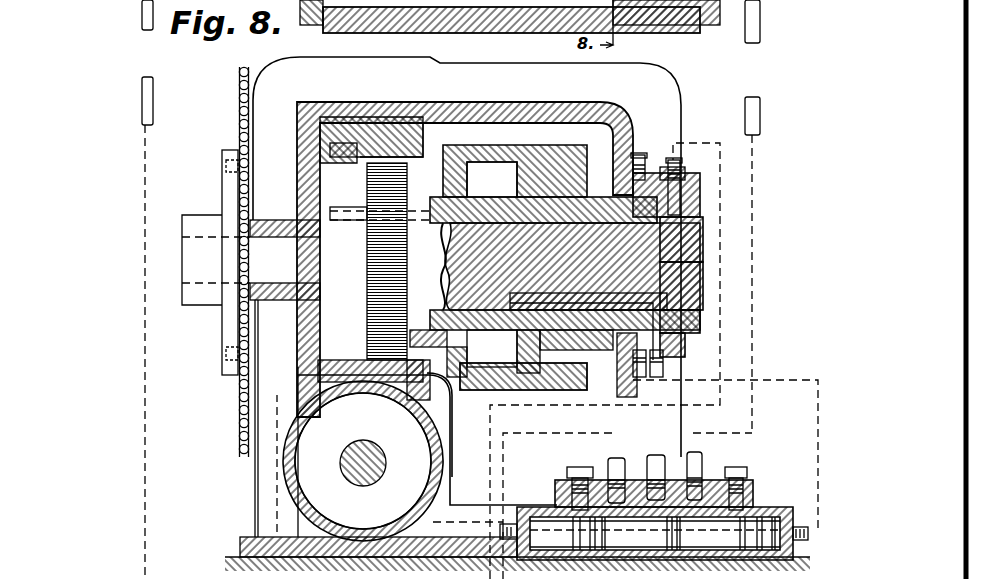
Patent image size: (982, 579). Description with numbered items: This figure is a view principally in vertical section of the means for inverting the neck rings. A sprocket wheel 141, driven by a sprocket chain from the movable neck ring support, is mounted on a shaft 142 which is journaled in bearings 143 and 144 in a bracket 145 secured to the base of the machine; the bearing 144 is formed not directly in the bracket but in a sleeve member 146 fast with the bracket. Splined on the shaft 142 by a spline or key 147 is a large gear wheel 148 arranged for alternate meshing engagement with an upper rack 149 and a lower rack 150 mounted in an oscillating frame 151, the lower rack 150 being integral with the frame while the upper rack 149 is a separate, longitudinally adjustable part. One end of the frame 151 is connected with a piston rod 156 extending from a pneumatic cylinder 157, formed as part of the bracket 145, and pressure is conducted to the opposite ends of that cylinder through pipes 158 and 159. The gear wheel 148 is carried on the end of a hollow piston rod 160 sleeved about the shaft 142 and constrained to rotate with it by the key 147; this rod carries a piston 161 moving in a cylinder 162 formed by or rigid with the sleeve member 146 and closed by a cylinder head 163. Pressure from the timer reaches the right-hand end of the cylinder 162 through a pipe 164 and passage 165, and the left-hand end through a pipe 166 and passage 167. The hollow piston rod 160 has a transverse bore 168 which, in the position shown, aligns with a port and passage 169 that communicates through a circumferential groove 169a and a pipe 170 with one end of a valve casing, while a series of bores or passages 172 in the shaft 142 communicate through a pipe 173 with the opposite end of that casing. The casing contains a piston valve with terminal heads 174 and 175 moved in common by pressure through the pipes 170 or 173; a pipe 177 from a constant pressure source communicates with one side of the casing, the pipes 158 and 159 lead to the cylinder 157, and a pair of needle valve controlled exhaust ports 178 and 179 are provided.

The sprocket wheel 141 is at (239, 75).
The shaft 142 is at (182, 242).
The bearing 143 is at (268, 228).
The bearing 144 is at (700, 205).
The bracket 145 is at (280, 74).
The sleeve member 146 is at (700, 320).
The spline or key 147 is at (343, 215).
The large gear wheel 148 is at (427, 130).
The upper rack 149 is at (320, 148).
The lower rack 150 is at (345, 390).
The oscillating frame 151 is at (337, 84).
The piston rod 156 is at (373, 475).
The pneumatic cylinder 157 is at (280, 482).
The pipe 158 is at (146, 82).
The pipe 159 is at (760, 107).
The hollow piston rod 160 is at (472, 200).
The piston 161 is at (532, 167).
The cylinder 162 is at (477, 390).
The cylinder head 163 is at (412, 368).
The pipe 164 is at (640, 155).
The passage 165 is at (588, 203).
The pipe 166 is at (645, 372).
The passage 167 is at (568, 378).
The transverse bore 168 is at (492, 212).
The port and passage 169 is at (703, 228).
The circumferential groove 169a is at (703, 300).
The pipe 170 is at (675, 163).
The bores or passages 172 is at (703, 283).
The pipe 173 is at (685, 356).
The terminal head 174 is at (580, 530).
The terminal head 175 is at (762, 510).
The pipe 177 is at (659, 445).
The needle valve controlled exhaust port 178 is at (556, 498).
The needle valve controlled exhaust port 179 is at (729, 471).